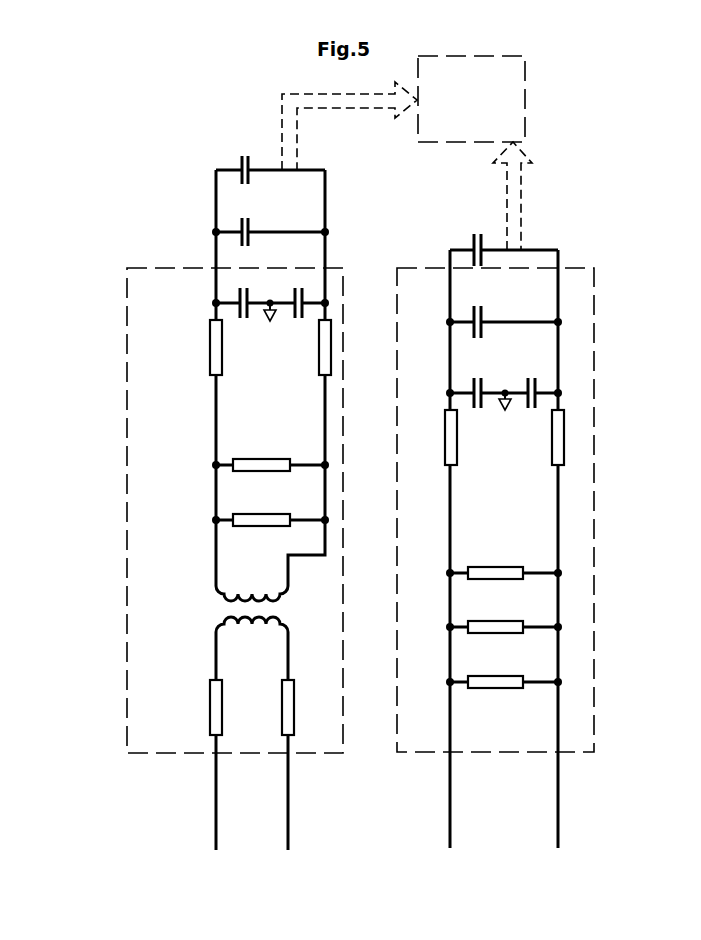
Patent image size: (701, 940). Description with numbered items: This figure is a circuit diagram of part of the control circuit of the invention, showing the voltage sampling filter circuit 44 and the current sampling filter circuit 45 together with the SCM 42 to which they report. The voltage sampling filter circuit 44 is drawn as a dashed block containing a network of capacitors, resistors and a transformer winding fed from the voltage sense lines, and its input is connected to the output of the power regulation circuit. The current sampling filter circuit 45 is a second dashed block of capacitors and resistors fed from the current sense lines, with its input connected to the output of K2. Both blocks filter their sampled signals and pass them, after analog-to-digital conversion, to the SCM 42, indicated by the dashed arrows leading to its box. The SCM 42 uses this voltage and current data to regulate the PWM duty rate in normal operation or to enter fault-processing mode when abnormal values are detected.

The SCM 42 is at (471, 99).
The voltage sampling filter circuit 44 is at (173, 268).
The current sampling filter circuit 45 is at (650, 248).